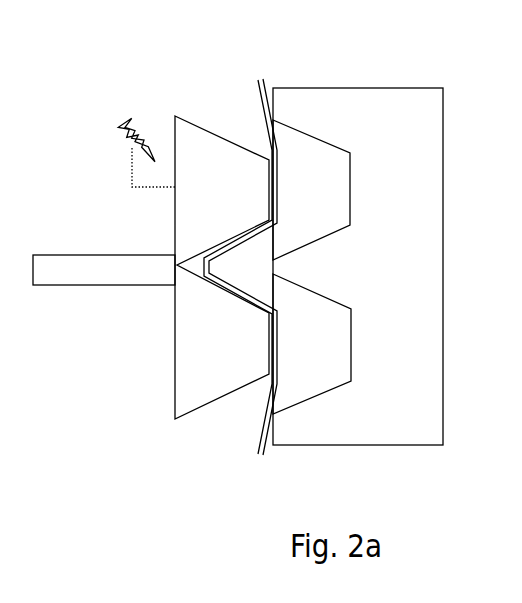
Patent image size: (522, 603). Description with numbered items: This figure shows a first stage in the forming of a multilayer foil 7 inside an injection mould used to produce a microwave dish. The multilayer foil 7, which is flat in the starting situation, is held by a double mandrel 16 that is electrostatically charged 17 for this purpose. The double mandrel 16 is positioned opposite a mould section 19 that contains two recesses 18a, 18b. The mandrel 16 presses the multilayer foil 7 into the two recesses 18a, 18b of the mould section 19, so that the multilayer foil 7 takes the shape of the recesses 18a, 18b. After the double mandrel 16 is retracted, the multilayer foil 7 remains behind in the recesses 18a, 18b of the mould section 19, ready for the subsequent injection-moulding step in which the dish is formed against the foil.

The multilayer foil 7 is at (261, 101).
The double mandrel 16 is at (228, 207).
The electrostatic charge 17 is at (132, 118).
The recess 18a is at (329, 200).
The recess 18b is at (312, 344).
The mould section 19 is at (386, 117).